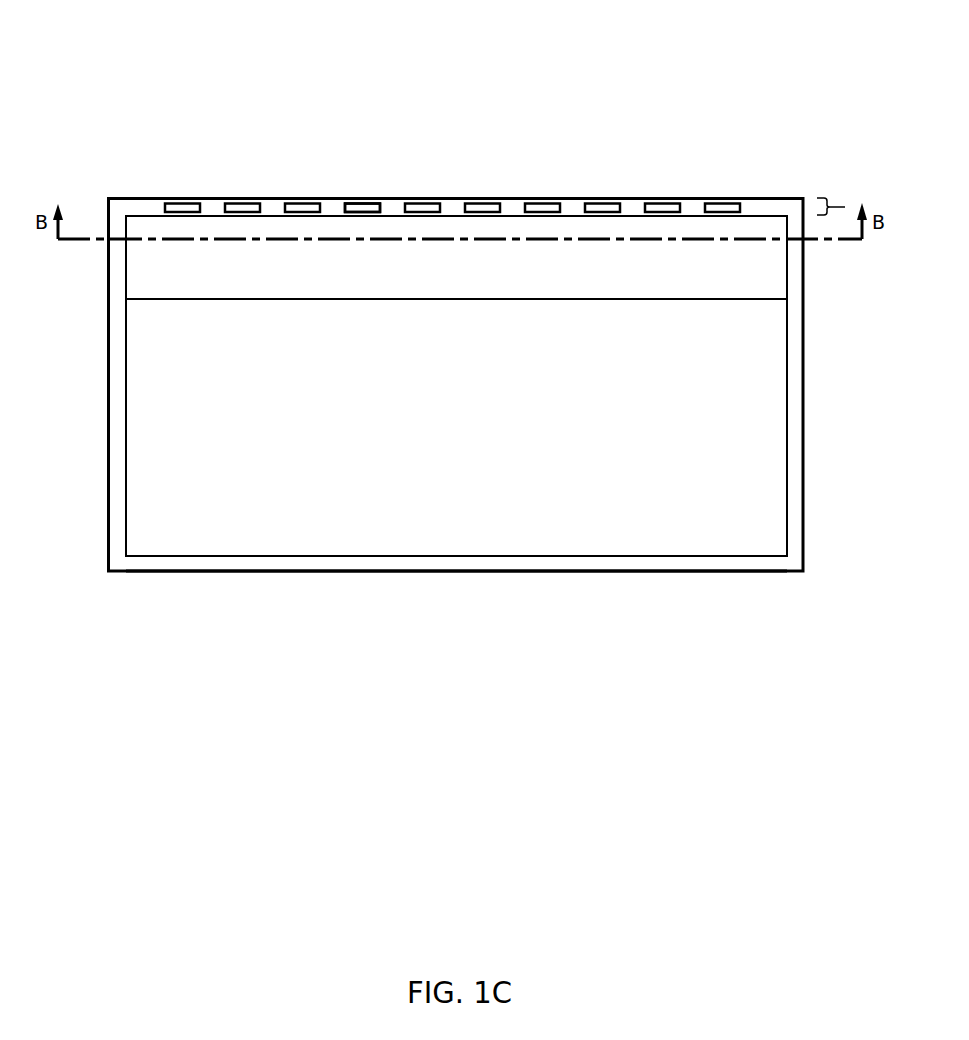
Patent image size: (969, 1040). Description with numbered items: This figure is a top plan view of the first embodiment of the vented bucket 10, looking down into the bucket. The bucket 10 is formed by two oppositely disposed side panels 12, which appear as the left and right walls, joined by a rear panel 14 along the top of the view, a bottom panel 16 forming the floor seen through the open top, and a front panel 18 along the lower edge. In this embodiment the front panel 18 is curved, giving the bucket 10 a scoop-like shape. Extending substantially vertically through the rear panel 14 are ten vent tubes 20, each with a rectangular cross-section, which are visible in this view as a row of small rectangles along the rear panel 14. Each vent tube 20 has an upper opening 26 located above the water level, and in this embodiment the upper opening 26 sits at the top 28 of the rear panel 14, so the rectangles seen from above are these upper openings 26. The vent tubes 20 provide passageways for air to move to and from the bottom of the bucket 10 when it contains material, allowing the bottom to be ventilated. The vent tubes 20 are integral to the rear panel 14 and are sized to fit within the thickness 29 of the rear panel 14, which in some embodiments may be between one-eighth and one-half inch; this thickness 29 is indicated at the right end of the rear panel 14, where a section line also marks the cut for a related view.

The vented bucket 10 is at (178, 98).
The side panel 12 is at (107, 480).
The rear panel 14 is at (688, 198).
The bottom panel 16 is at (437, 272).
The front panel 18 is at (398, 571).
The vent tube 20 is at (300, 205).
The upper opening 26 is at (363, 205).
The top of the rear panel 28 is at (571, 204).
The thickness of the rear panel 29 is at (839, 193).